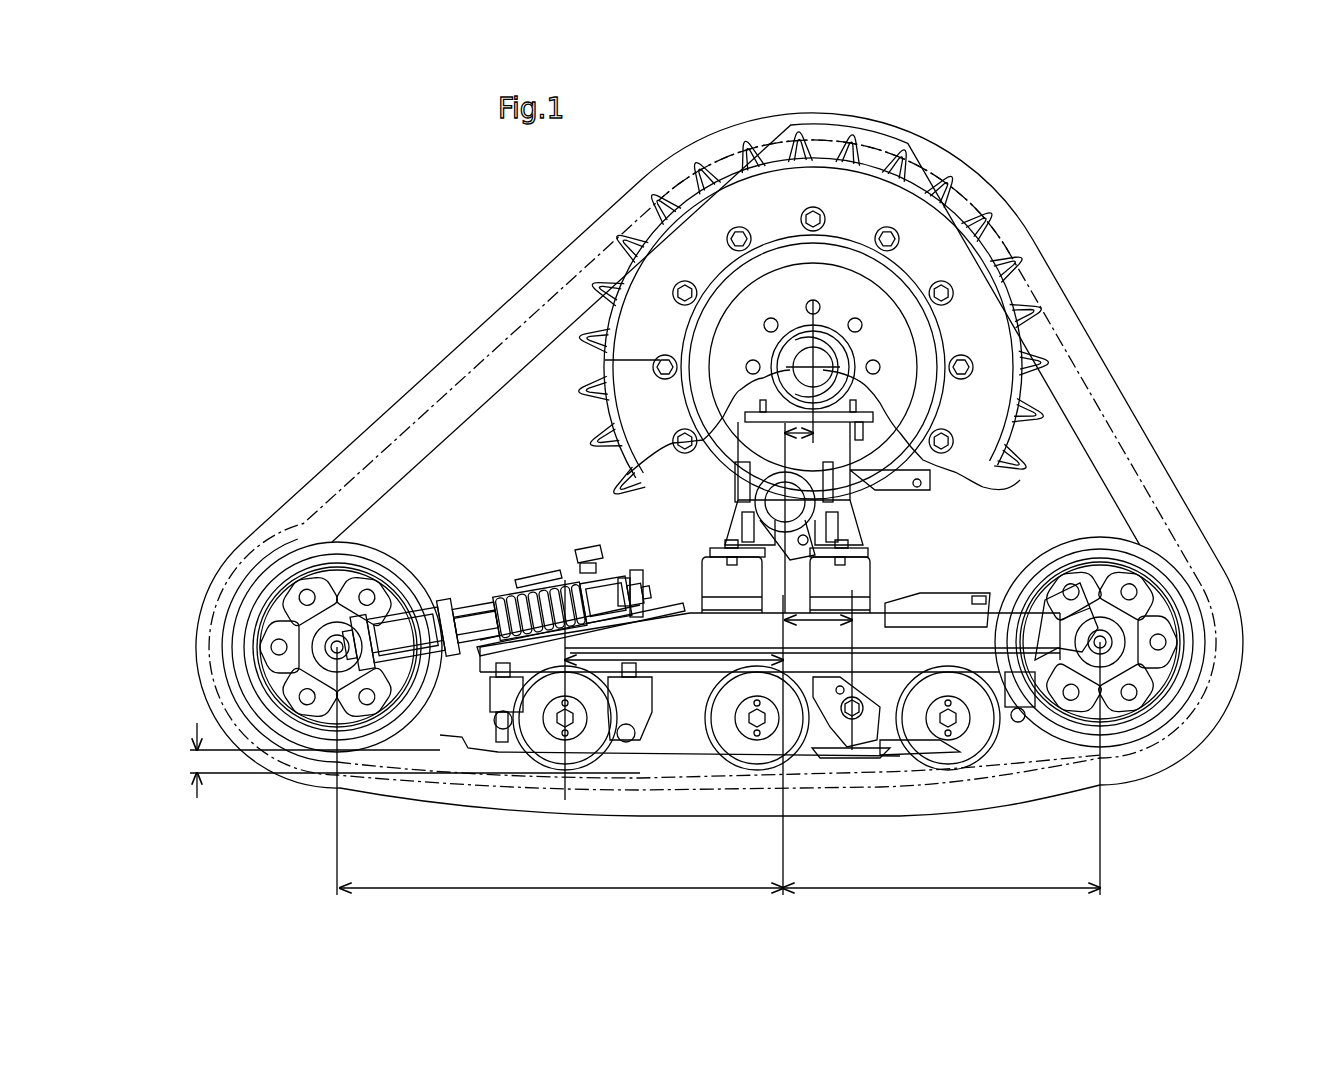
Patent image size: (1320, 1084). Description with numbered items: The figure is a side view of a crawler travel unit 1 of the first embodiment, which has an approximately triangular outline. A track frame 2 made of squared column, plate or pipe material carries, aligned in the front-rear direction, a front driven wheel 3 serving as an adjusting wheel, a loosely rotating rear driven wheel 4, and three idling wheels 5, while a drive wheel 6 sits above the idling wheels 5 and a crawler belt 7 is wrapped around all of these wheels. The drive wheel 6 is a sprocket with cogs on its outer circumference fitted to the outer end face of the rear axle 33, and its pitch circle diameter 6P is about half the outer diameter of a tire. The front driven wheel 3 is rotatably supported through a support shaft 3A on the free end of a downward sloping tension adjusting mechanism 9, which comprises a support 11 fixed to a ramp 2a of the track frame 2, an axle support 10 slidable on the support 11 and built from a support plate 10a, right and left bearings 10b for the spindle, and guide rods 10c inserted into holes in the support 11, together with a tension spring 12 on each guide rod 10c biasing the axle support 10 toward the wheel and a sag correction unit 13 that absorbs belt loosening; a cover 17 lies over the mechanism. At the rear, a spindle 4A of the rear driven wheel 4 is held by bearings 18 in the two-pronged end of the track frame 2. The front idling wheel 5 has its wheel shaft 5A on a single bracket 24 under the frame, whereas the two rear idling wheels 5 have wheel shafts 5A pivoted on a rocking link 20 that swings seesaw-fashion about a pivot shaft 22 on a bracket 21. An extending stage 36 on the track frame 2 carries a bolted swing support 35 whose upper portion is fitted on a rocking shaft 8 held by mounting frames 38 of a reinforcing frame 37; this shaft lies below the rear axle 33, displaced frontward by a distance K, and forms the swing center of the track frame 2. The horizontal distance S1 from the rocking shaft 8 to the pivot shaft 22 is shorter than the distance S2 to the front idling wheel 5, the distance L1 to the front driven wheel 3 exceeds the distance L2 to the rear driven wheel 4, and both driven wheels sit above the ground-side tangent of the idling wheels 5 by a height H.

The crawler travel unit 1 is at (486, 290).
The track frame 2 is at (680, 678).
The ramp 2a is at (626, 604).
The front driven wheel 3 is at (332, 548).
The support shaft 3A is at (332, 638).
The rear driven wheel 4 is at (1140, 572).
The spindle 4A is at (1097, 626).
The idling wheels 5 is at (540, 752).
The wheel shaft 5A is at (565, 740).
The drive wheel 6 is at (1052, 358).
The pitch circle diameter 6P is at (808, 362).
The crawler belt 7 is at (1046, 284).
The rocking shaft 8 is at (805, 510).
The tension adjusting mechanism 9 is at (525, 512).
The axle support 10 is at (486, 508).
The support plate 10a is at (450, 600).
The bearings 10b is at (392, 615).
The guide rods 10c is at (489, 600).
The support 11 is at (585, 592).
The tension spring 12 is at (556, 590).
The sag correction unit 13 is at (495, 575).
The cover 17 is at (528, 562).
The bearings 18 is at (1078, 580).
The rocking link 20 is at (830, 722).
The bracket 21 is at (882, 680).
The pivot shaft 22 is at (858, 748).
The bracket 24 is at (496, 692).
The rear axle 33 is at (838, 360).
The swing support 35 is at (845, 530).
The extending stage 36 is at (872, 582).
The reinforcing frame 37 is at (733, 450).
The mounting frames 38 is at (762, 460).
The distance K is at (792, 352).
The horizontal distance S1 is at (818, 537).
The horizontal distance S2 is at (674, 639).
The horizontal distance L1 is at (561, 758).
The horizontal distance L2 is at (941, 904).
The height H is at (403, 760).